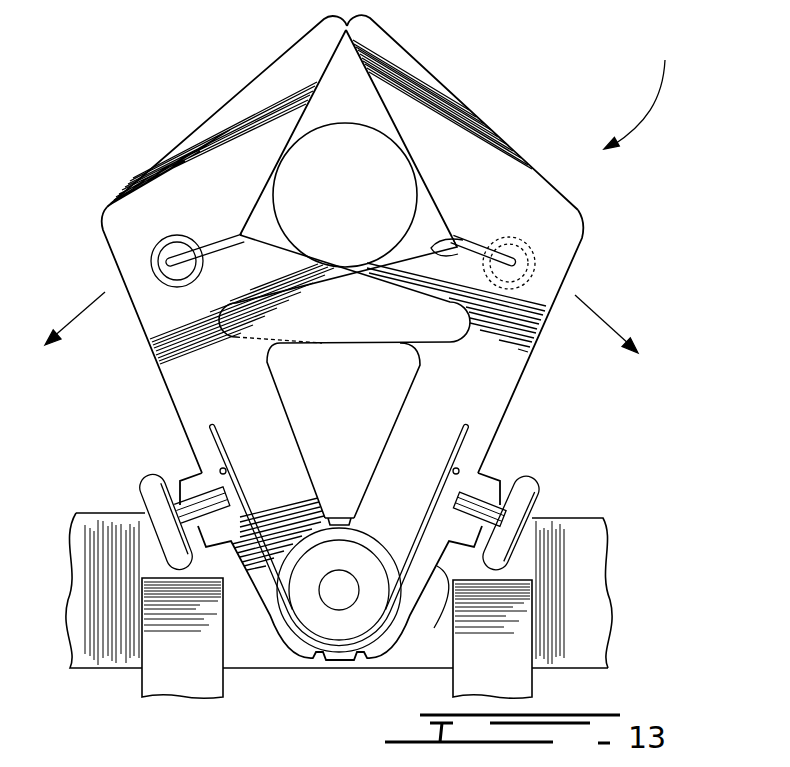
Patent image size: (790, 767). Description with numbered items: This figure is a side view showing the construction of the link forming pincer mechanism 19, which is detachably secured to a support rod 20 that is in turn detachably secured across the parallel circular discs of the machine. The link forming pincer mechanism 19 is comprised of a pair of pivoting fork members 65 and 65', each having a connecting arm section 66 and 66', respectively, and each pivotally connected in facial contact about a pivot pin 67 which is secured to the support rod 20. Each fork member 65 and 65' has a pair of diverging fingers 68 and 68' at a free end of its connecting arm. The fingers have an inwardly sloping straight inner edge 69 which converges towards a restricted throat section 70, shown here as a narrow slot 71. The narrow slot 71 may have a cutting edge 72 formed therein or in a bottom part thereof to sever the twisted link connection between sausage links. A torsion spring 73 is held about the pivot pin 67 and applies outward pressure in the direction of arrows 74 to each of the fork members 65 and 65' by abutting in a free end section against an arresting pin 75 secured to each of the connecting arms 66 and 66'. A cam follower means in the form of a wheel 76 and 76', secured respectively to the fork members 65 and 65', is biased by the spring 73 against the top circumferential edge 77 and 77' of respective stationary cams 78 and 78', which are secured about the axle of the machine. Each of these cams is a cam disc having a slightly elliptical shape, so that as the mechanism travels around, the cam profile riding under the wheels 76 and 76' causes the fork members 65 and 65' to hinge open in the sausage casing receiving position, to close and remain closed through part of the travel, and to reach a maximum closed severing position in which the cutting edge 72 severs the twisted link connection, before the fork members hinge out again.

The link forming pincer mechanism 19 is at (642, 88).
The support rod 20 is at (595, 517).
The pivoting fork member 65 is at (470, 104).
The pivoting fork member 65' is at (212, 144).
The connecting arm section 66 is at (472, 348).
The connecting arm section 66' is at (221, 337).
The pivot pin 67 is at (337, 600).
The diverging finger 68 is at (398, 179).
The diverging finger 68' is at (288, 267).
The inner edge 69 is at (360, 67).
The restricted throat section 70 is at (470, 237).
The narrow slot 71 is at (407, 245).
The cutting edge 72 is at (513, 262).
The torsion spring 73 is at (428, 513).
The arrows 74 is at (81, 310).
The arresting pin 75 is at (226, 470).
The wheel 76 is at (524, 541).
The wheel 76' is at (144, 522).
The top circumferential edge 77 is at (431, 615).
The top circumferential edge 77' is at (278, 521).
The stationary cam 78 is at (523, 643).
The stationary cam 78' is at (193, 666).